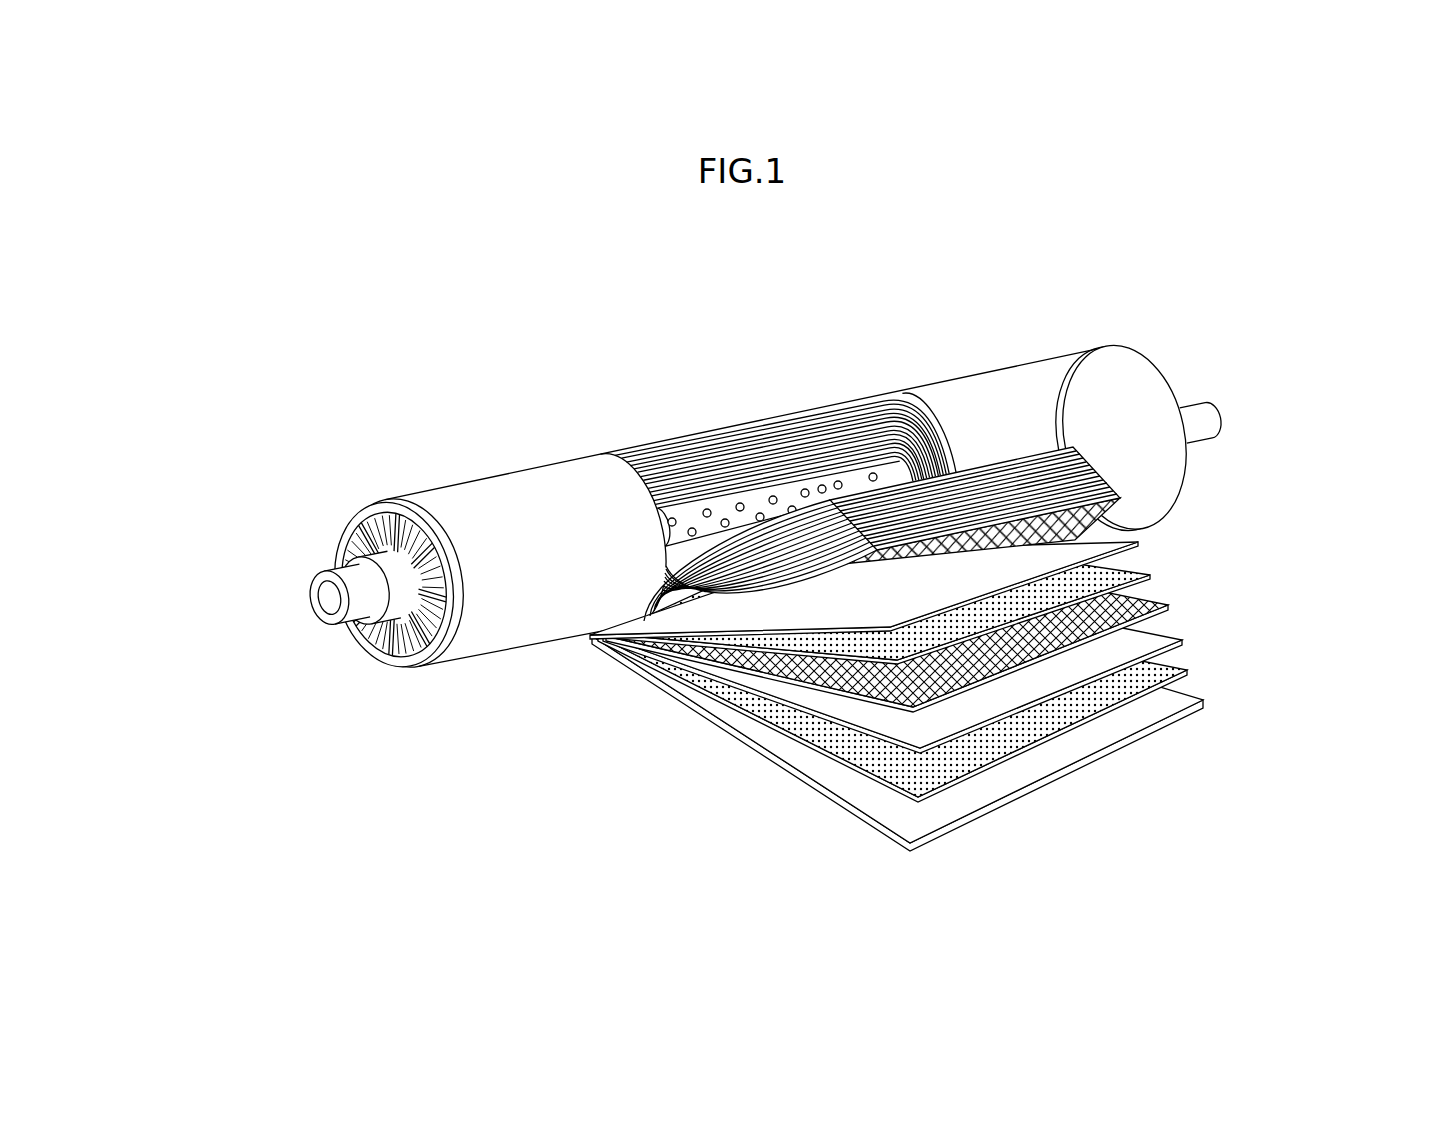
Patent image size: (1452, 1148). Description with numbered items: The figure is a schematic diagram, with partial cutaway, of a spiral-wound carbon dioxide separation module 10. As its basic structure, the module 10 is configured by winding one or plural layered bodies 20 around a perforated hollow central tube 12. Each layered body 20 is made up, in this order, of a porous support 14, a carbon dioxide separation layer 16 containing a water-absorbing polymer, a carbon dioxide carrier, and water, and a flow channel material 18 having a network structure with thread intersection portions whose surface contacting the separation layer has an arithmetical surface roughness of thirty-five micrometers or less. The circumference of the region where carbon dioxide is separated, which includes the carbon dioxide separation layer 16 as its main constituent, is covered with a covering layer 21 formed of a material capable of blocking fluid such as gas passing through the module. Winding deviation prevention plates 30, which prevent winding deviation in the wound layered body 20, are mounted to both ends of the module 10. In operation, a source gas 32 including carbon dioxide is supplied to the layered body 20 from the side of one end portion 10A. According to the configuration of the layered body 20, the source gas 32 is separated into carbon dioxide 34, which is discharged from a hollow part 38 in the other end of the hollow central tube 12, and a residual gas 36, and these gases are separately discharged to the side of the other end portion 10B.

The carbon dioxide separation module 10 is at (958, 346).
The one end portion 10A is at (1182, 479).
The other end portion 10B is at (405, 668).
The perforated hollow central tube 12 is at (860, 478).
The porous support 14 is at (1193, 670).
The carbon dioxide separation layer 16 is at (1187, 641).
The flow channel material 18 is at (1170, 606).
The layered body 20 is at (986, 624).
The covering layer 21 is at (1203, 701).
The winding deviation prevention plate 30 is at (1090, 347).
The source gas 32 is at (1182, 353).
The carbon dioxide 34 is at (350, 602).
The residual gas 36 is at (413, 615).
The hollow part 38 is at (352, 621).